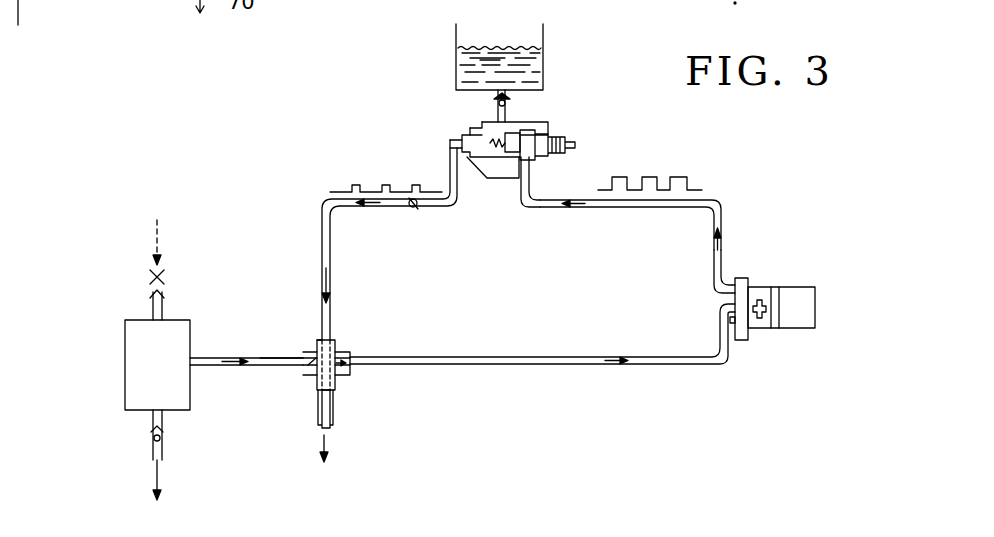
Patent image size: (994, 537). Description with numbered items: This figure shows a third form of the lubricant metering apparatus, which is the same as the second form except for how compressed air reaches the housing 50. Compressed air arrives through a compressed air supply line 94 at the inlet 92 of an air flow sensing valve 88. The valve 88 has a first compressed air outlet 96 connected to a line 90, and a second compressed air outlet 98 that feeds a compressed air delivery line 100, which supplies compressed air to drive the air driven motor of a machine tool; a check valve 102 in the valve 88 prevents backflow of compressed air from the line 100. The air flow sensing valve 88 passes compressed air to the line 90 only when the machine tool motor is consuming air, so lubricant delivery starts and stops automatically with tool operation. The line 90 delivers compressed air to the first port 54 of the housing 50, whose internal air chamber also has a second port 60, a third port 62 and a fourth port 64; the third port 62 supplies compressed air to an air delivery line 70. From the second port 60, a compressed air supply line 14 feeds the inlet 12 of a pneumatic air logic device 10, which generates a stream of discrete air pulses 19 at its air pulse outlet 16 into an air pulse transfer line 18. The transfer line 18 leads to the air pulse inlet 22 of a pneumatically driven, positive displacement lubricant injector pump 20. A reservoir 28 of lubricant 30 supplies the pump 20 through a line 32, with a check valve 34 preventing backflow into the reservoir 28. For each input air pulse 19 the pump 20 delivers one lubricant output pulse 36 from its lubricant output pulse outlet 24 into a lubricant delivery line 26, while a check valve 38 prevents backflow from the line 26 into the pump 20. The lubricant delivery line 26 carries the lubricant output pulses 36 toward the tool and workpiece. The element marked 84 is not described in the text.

The pneumatic air logic device 10 is at (800, 297).
The inlet 12 is at (735, 302).
The compressed air supply line 14 is at (650, 363).
The air pulse outlet 16 is at (722, 290).
The air pulse transfer line 18 is at (713, 206).
The air pulses 19 is at (665, 176).
The lubricant injector pump 20 is at (495, 172).
The air pulse inlet 22 is at (530, 196).
The lubricant output pulse outlet 24 is at (455, 146).
The lubricant delivery line 26 is at (323, 233).
The reservoir 28 is at (545, 30).
The lubricant 30 is at (462, 70).
The line 32 is at (494, 95).
The check valve 34 is at (507, 97).
The lubricant output pulses 36 is at (406, 184).
The check valve 38 is at (416, 210).
The housing 50 is at (362, 378).
The first port 54 is at (312, 382).
The second port 60 is at (336, 350).
The third port 62 is at (337, 388).
The fourth port 64 is at (318, 343).
The air delivery line 70 is at (335, 430).
The drain nipple 84 is at (318, 425).
The air flow sensing valve 88 is at (178, 388).
The line 90 is at (272, 358).
The inlet 92 is at (163, 318).
The compressed air supply line 94 is at (166, 286).
The first compressed air outlet 96 is at (193, 357).
The second compressed air outlet 98 is at (152, 412).
The compressed air delivery line 100 is at (165, 454).
The check valve 102 is at (166, 436).